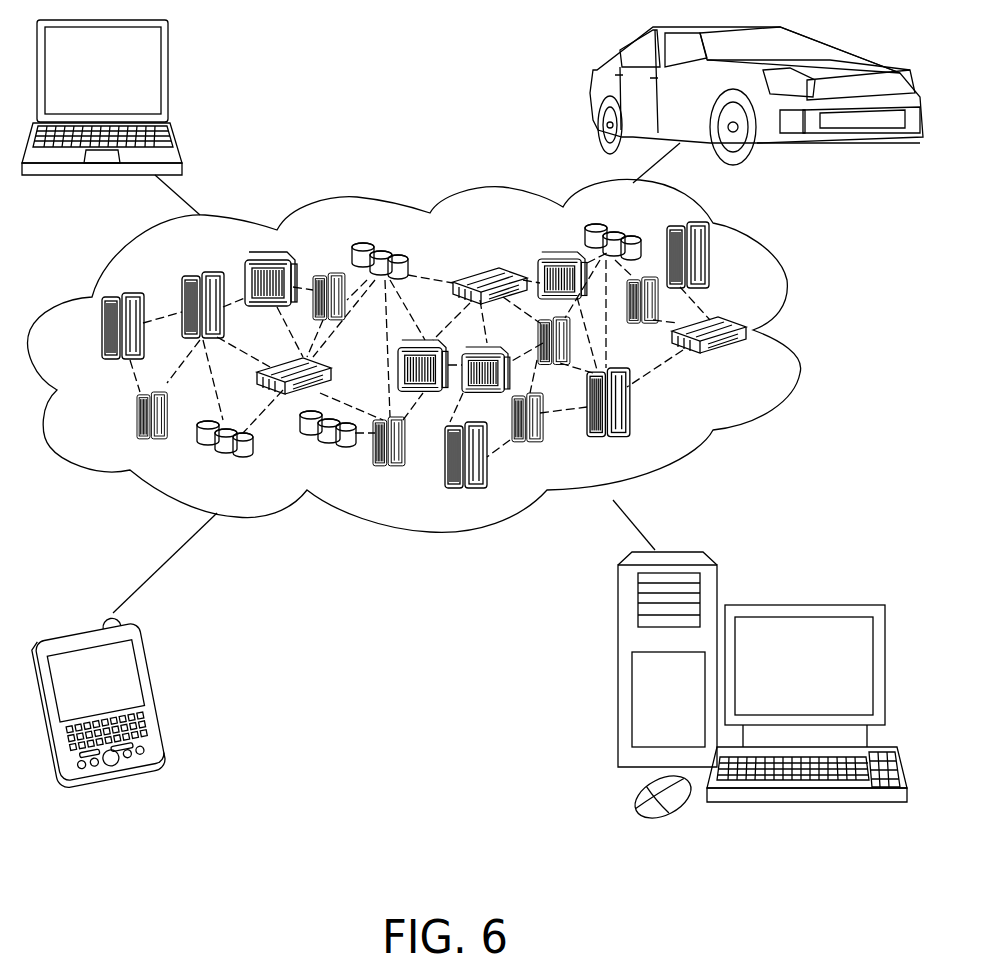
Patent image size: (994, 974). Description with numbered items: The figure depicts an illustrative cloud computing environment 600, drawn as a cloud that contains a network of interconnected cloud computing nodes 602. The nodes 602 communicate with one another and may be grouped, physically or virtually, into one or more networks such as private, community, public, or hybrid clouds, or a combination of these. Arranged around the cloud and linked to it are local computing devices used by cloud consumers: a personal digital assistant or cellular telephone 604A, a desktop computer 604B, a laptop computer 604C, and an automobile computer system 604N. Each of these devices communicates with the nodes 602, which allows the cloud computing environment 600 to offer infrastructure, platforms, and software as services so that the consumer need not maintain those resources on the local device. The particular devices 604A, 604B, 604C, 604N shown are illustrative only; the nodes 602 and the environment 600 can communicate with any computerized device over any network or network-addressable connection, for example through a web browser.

The cloud computing environment 600 is at (753, 330).
The cloud computing node 602 is at (749, 366).
The personal digital assistant or cellular telephone 604A is at (147, 663).
The desktop computer 604B is at (790, 607).
The laptop computer 604C is at (168, 55).
The automobile computer system 604N is at (593, 93).